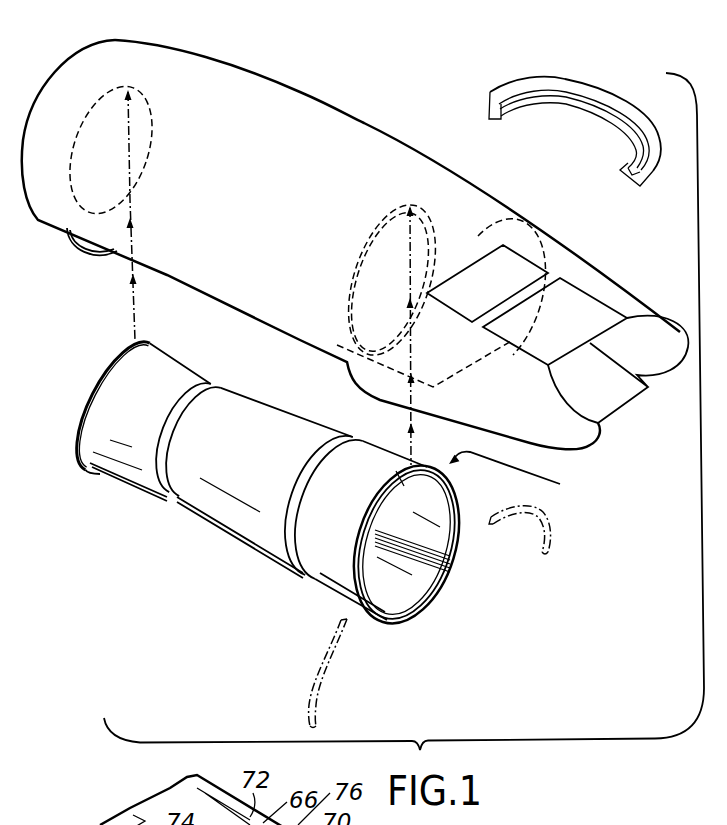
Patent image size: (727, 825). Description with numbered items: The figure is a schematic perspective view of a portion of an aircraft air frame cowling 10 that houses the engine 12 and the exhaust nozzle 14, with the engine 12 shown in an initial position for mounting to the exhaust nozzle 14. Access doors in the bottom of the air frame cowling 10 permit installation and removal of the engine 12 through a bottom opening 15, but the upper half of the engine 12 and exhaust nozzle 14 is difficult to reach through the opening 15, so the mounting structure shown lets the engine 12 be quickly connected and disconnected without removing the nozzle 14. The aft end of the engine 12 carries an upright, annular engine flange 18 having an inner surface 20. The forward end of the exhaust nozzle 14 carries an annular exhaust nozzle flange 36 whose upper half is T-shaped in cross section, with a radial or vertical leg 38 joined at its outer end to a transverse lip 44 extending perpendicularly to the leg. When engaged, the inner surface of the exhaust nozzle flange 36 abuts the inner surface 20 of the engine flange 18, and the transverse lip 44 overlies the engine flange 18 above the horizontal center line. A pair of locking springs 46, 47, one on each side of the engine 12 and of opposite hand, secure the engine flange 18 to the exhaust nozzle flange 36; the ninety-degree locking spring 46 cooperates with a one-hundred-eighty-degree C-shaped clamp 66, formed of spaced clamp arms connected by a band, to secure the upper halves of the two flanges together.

The air frame cowling 10 is at (303, 131).
The engine 12 is at (187, 535).
The exhaust nozzle 14 is at (463, 238).
The bottom opening 15 is at (198, 308).
The engine flange 18 is at (405, 618).
The inner surface 20 is at (440, 586).
The exhaust nozzle flange 36 is at (340, 346).
The vertical leg 38 is at (301, 352).
The transverse lip 44 is at (362, 232).
The locking spring 46 is at (352, 538).
The locking spring 47 is at (534, 499).
The C-shaped clamp 66 is at (498, 83).